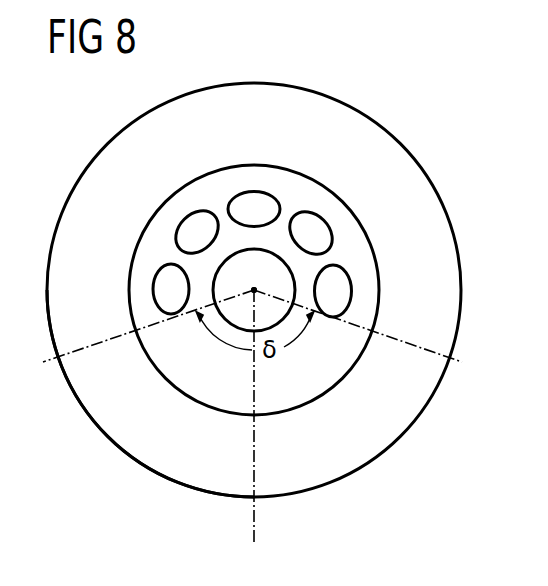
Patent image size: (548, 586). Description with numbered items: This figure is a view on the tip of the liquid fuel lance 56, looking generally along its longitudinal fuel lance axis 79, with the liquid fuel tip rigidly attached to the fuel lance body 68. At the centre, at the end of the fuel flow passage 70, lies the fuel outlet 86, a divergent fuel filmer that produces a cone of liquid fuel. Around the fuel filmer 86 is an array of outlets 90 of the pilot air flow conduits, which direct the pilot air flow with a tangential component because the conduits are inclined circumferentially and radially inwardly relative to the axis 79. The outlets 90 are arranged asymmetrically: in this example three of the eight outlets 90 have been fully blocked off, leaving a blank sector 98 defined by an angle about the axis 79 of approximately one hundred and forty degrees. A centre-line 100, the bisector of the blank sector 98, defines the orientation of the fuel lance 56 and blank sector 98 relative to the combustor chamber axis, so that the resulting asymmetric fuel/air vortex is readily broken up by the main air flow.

The liquid fuel lance 56 is at (392, 126).
The fuel lance body 68 is at (120, 435).
The fuel flow passage 70 is at (225, 280).
The fuel lance axis 79 is at (254, 288).
The fuel outlet 86 is at (288, 265).
The outlets 90 is at (260, 203).
The blank sector 98 is at (188, 385).
The centre-line 100 is at (255, 530).